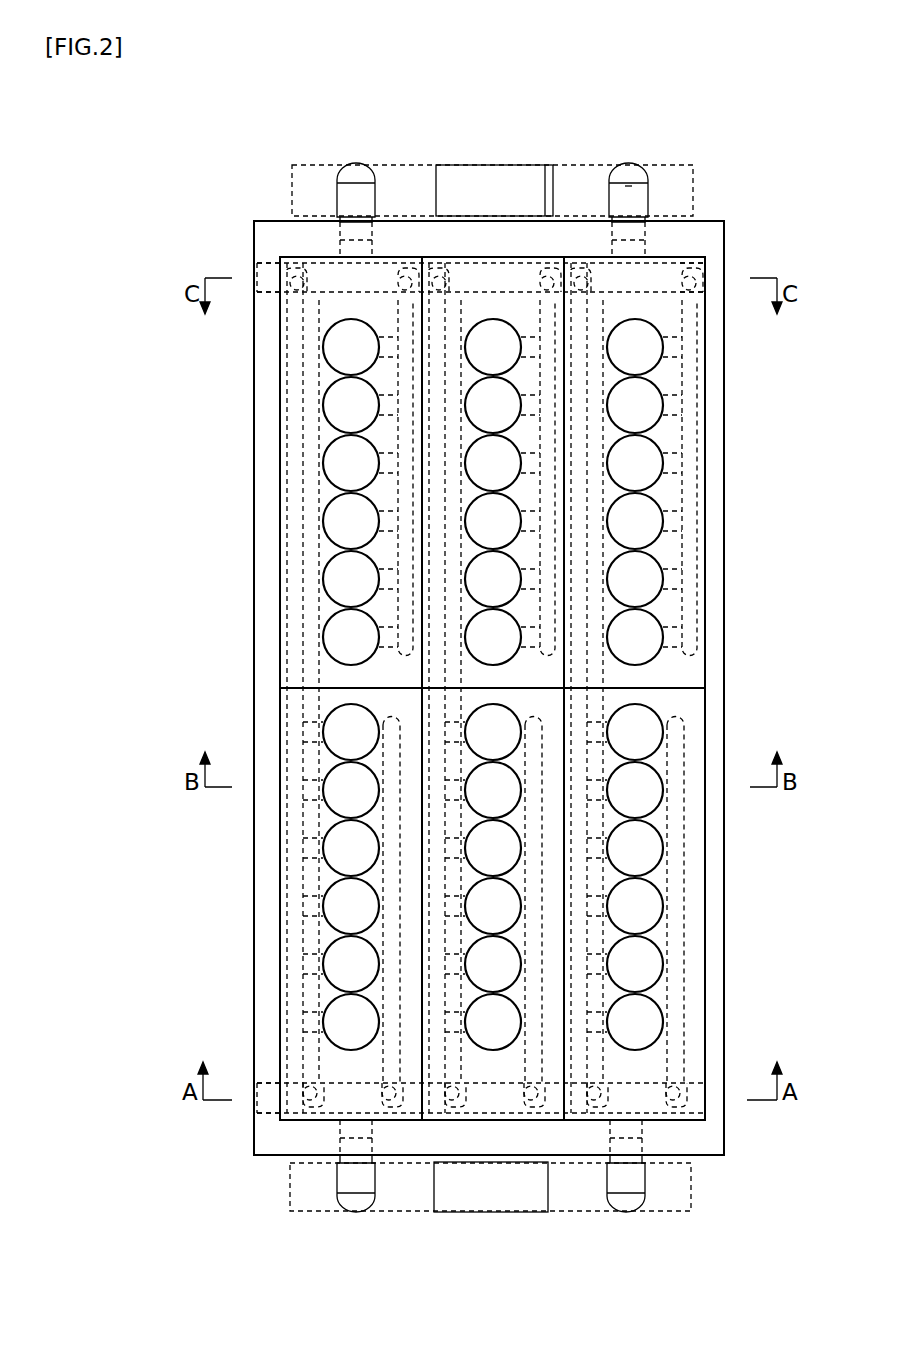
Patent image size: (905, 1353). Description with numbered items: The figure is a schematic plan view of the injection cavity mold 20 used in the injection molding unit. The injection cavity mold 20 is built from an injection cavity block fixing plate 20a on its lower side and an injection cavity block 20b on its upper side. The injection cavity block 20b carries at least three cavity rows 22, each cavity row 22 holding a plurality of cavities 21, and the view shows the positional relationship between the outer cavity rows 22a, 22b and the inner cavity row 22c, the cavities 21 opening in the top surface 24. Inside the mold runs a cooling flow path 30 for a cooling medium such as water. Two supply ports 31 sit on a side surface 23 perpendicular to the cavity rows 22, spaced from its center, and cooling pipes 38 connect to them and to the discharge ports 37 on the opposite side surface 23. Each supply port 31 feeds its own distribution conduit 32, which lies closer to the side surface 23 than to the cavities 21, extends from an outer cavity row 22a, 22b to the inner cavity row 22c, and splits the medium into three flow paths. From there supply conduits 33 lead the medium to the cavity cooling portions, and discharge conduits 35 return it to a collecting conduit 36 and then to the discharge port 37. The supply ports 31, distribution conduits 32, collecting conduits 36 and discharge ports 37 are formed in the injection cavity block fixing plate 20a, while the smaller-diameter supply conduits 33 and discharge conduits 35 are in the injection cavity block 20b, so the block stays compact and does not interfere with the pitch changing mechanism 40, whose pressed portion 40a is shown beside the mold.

The injection cavity mold 20 is at (752, 434).
The injection cavity block fixing plate 20a is at (716, 490).
The injection cavity block 20b is at (668, 553).
The cavity 21 is at (650, 353).
The cavity row 22 is at (728, 142).
The outer cavity row 22a is at (352, 298).
The outer cavity row 22b is at (630, 300).
The inner cavity row 22c is at (493, 300).
The side surface 23 is at (704, 222).
The top surface 24 is at (692, 670).
The cooling flow path 30 is at (377, 1157).
The supply port 31 is at (350, 1165).
The distribution conduit 32 is at (287, 1115).
The supply conduit 33 is at (320, 1075).
The discharge conduit 35 is at (382, 290).
The collecting conduit 36 is at (290, 262).
The discharge port 37 is at (352, 300).
The cooling pipe 38 is at (627, 188).
The pitch changing mechanism 40 is at (690, 185).
The pressed portion 40a is at (537, 172).